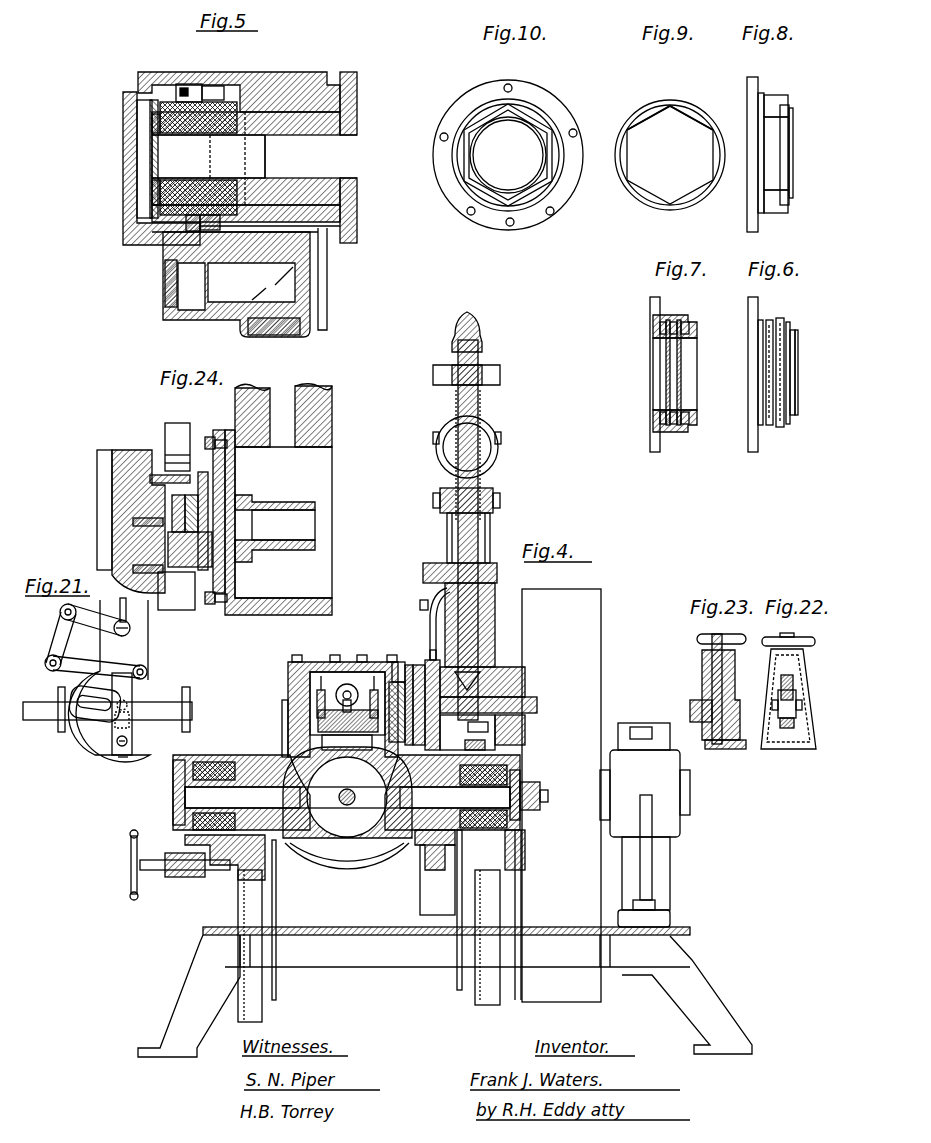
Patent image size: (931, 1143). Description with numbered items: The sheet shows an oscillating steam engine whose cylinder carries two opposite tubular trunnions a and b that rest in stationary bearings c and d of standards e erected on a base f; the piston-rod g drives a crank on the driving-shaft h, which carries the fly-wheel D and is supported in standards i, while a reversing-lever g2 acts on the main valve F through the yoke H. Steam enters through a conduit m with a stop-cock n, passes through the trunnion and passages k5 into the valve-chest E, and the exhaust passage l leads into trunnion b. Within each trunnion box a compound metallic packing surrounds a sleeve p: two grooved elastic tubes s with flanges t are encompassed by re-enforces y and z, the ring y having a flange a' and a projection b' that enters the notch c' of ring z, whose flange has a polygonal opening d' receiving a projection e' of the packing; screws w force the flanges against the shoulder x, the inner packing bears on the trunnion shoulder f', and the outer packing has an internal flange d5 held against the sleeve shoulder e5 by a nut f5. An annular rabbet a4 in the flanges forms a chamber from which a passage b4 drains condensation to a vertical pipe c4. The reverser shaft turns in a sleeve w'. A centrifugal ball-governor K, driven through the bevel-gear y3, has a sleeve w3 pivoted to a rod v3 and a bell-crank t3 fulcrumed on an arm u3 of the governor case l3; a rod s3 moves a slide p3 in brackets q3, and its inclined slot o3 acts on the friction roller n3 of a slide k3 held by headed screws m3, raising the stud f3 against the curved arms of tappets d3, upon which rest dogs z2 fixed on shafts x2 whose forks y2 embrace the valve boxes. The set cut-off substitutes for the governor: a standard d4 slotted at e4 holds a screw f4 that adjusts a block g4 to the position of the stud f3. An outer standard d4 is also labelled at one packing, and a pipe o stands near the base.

In FIG. 5, the trunnion bearing c is at (231, 158).
In FIG. 4, the trunnion bearing c is at (346, 830).
In FIG. 5, the trunnion a is at (246, 158).
In FIG. 4, the trunnion a is at (350, 799).
In FIG. 5, the outer re-enforce z is at (244, 80).
In FIG. 9, the outer re-enforce z is at (705, 112).
In FIG. 8, the outer re-enforce z is at (776, 154).
In FIG. 4, the outer re-enforce z is at (478, 726).
In FIG. 5, the shoulder x is at (236, 80).
In FIG. 5, the screws w is at (182, 74).
In FIG. 5, the flange t is at (190, 84).
In FIG. 8, the flange t is at (752, 154).
In FIG. 7, the flange t is at (654, 374).
In FIG. 6, the flange t is at (753, 374).
In FIG. 5, the flange of re-enforce a' is at (204, 151).
In FIG. 10, the flange of re-enforce a' is at (523, 155).
In FIG. 8, the flange of re-enforce a' is at (770, 154).
In FIG. 5, the sleeve w' is at (187, 227).
In FIG. 5, the nut f5 is at (152, 118).
In FIG. 5, the internal flange d5 is at (158, 134).
In FIG. 5, the shoulder of sleeve e5 is at (190, 133).
In FIG. 5, the sleeve p is at (208, 156).
In FIG. 4, the sleeve p is at (347, 797).
In FIG. 5, the annular rabbet a4 is at (220, 156).
In FIG. 5, the shoulder of trunnion f' is at (252, 158).
In FIG. 5, the passage b4 is at (270, 221).
In FIG. 4, the passage b4 is at (472, 915).
In FIG. 5, the vertical pipe c4 is at (253, 282).
In FIG. 24, the vertical pipe c4 is at (158, 474).
In FIG. 4, the vertical pipe c4 is at (401, 660).
In FIG. 10, the inner re-enforce y is at (508, 155).
In FIG. 8, the inner re-enforce y is at (774, 155).
In FIG. 10, the projection b' is at (514, 155).
In FIG. 8, the projection b' is at (776, 153).
In FIG. 10, the polygonal projection e' is at (523, 155).
In FIG. 7, the polygonal projection e' is at (687, 373).
In FIG. 6, the polygonal projection e' is at (803, 374).
In FIG. 24, the polygonal projection e' is at (178, 513).
In FIG. 10, the notch c' is at (509, 155).
In FIG. 9, the notch c' is at (672, 155).
In FIG. 8, the notch c' is at (799, 153).
In FIG. 24, the notch c' is at (191, 513).
In FIG. 9, the polygonal opening d' is at (670, 155).
In FIG. 7, the packing tube s is at (674, 373).
In FIG. 6, the packing tube s is at (776, 364).
In FIG. 7, the standard d4 is at (666, 373).
In FIG. 24, the standard d4 is at (133, 522).
In FIG. 4, the standard d4 is at (510, 730).
In FIG. 24, the governor case l3 is at (278, 499).
In FIG. 21, the governor case l3 is at (111, 681).
In FIG. 4, the governor case l3 is at (467, 732).
In FIG. 24, the friction roller n3 is at (255, 500).
In FIG. 24, the horizontal slide p3 is at (232, 480).
In FIG. 21, the horizontal slide p3 is at (124, 709).
In FIG. 24, the headed screws m3 is at (208, 436).
In FIG. 21, the headed screws m3 is at (146, 664).
In FIG. 24, the slide k3 is at (202, 470).
In FIG. 21, the slide k3 is at (122, 714).
In FIG. 24, the dog z2 is at (177, 447).
In FIG. 24, the valve-chest E is at (138, 521).
In FIG. 4, the valve-chest E is at (343, 700).
In FIG. 24, the shaft x2 is at (104, 510).
In FIG. 4, the shaft x2 is at (348, 687).
In FIG. 24, the stud f3 is at (190, 549).
In FIG. 21, the stud f3 is at (113, 734).
In FIG. 24, the tappet d3 is at (176, 591).
In FIG. 21, the ears or brackets q3 is at (200, 722).
In FIG. 21, the inclined slot o3 is at (95, 704).
In FIG. 21, the bell-crank t3 is at (50, 634).
In FIG. 4, the bell-crank t3 is at (432, 692).
In FIG. 21, the rod v3 is at (128, 617).
In FIG. 4, the rod v3 is at (430, 592).
In FIG. 21, the arm u3 is at (64, 657).
In FIG. 21, the rod s3 is at (96, 666).
In FIG. 4, the rod s3 is at (424, 646).
In FIG. 4, the centrifugal ball-governor K is at (471, 516).
In FIG. 4, the governor sleeve w3 is at (490, 540).
In FIG. 4, the bevel-gear y3 is at (490, 660).
In FIG. 4, the fly-wheel D is at (561, 795).
In FIG. 4, the reversing-lever g2 is at (540, 772).
In FIG. 4, the yoke H is at (288, 692).
In FIG. 4, the main valve F is at (348, 716).
In FIG. 4, the forks y2 is at (346, 697).
In FIG. 4, the passages k5 is at (290, 742).
In FIG. 4, the exhaust passage l is at (348, 801).
In FIG. 4, the piston-rod g is at (351, 819).
In FIG. 4, the standards i is at (416, 828).
In FIG. 4, the trunnion b is at (476, 795).
In FIG. 4, the trunnion bearing d is at (435, 846).
In FIG. 4, the base f is at (445, 988).
In FIG. 4, the driving-shaft h is at (650, 825).
In FIG. 4, the stop-cock n is at (185, 870).
In FIG. 4, the standards e is at (197, 868).
In FIG. 4, the conduit m is at (250, 946).
In FIG. 4, the pipe o is at (478, 917).
In FIG. 23, the screw f4 is at (722, 690).
In FIG. 23, the block g4 is at (698, 705).
In FIG. 22, the block g4 is at (787, 701).
In FIG. 23, the slot e4 is at (706, 731).
In FIG. 22, the slot e4 is at (788, 700).